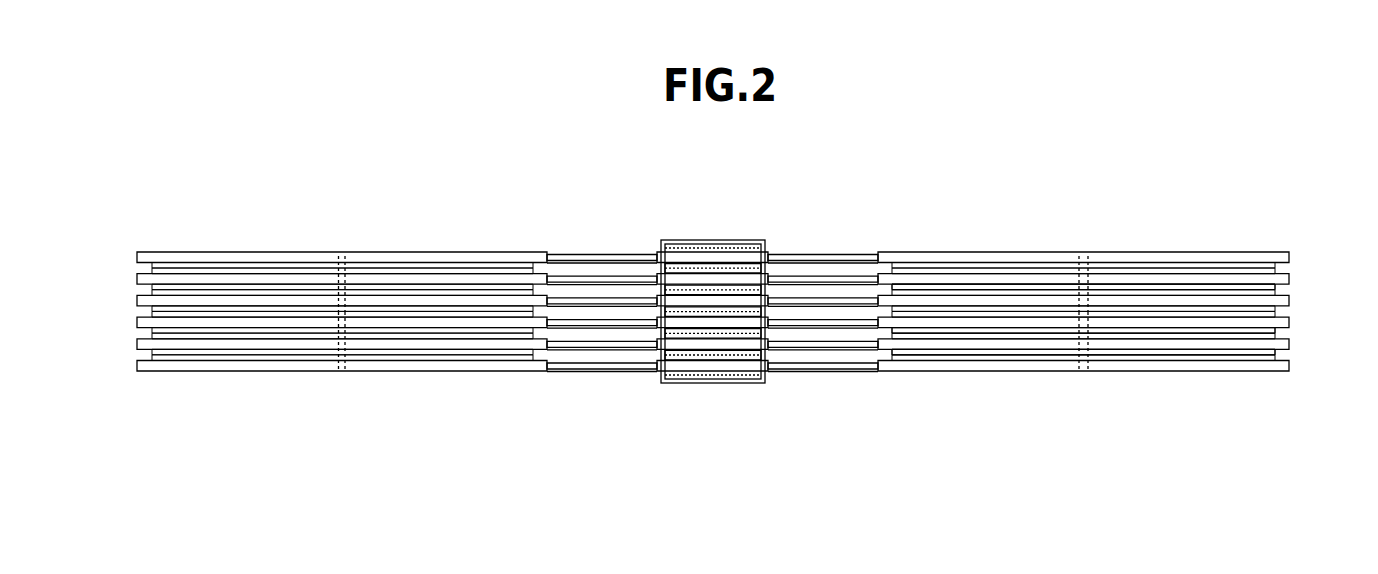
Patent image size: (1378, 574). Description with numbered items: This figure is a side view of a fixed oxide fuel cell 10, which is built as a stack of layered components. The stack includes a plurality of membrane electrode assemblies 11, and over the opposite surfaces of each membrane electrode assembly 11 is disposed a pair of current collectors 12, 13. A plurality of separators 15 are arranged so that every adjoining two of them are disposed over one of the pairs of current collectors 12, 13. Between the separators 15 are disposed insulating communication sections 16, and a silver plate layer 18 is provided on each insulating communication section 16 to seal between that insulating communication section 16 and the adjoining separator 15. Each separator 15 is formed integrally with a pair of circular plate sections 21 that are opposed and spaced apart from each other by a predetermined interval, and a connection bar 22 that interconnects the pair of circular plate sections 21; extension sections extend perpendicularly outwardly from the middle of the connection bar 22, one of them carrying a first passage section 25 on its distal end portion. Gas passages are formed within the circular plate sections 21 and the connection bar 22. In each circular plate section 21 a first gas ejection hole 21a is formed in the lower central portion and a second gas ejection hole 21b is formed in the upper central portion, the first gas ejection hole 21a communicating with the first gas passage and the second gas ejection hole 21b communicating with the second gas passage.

The fixed oxide fuel cell 10 is at (953, 178).
The membrane electrode assembly 11 is at (716, 316).
The current collector 12 is at (233, 265).
The current collector 13 is at (283, 271).
The separator 15 is at (1180, 292).
The insulating communication section 16 is at (720, 270).
The silver plate layer 18 is at (757, 252).
The circular plate section 21 is at (488, 282).
The first gas ejection hole 21a is at (345, 370).
The second gas ejection hole 21b is at (340, 256).
The connection bar 22 is at (590, 263).
The first passage section 25 is at (662, 247).